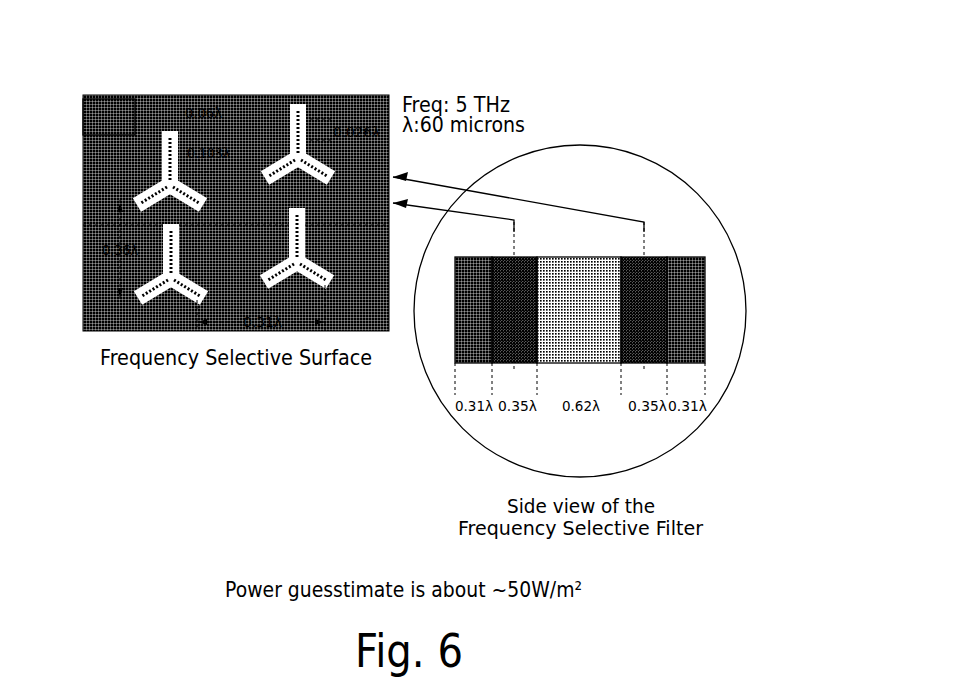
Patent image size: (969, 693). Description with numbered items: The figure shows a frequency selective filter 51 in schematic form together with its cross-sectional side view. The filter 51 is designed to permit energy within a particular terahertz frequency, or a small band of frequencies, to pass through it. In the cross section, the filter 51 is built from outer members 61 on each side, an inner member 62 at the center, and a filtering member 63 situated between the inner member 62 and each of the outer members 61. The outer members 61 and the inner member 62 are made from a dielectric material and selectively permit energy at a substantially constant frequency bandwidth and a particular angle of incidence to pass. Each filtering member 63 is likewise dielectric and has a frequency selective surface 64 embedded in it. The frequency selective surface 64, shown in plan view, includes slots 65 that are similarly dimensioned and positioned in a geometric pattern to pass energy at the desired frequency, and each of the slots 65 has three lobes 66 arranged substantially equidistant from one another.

The frequency selective filter 51 is at (666, 210).
The outer members 61 is at (695, 285).
The inner member 62 is at (663, 362).
The filtering member 63 is at (525, 330).
The frequency selective surface 64 is at (208, 94).
The slots 65 is at (307, 150).
The lobes 66 is at (147, 232).